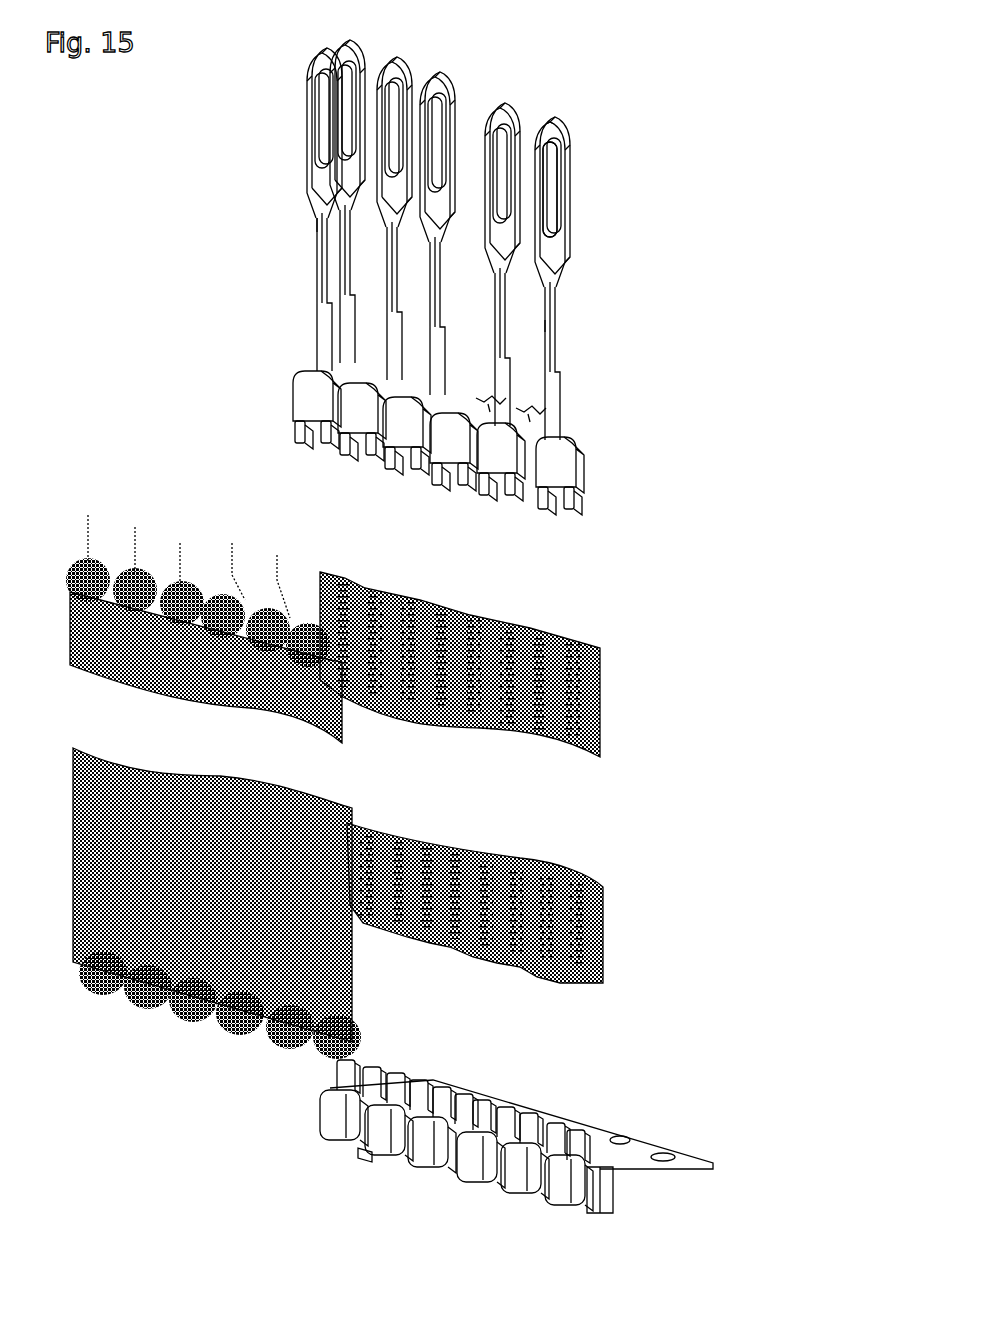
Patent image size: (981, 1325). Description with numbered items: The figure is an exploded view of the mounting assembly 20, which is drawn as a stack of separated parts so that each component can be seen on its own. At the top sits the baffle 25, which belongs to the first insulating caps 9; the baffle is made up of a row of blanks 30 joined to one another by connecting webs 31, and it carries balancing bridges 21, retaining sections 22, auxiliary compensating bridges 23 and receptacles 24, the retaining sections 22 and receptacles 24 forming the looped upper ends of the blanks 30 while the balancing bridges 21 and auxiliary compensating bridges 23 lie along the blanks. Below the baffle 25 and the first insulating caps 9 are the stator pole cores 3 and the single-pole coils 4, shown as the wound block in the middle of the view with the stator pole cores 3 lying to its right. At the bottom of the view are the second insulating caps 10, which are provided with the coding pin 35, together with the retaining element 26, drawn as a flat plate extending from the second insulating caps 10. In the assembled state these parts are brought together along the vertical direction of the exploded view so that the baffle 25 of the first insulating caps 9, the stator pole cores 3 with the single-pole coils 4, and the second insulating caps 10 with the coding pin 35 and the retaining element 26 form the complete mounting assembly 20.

The mounting assembly 20 is at (76, 234).
The auxiliary compensating bridges 23 is at (398, 74).
The baffle 25 is at (565, 112).
The receptacles 24 is at (548, 173).
The retaining sections 22 is at (564, 205).
The connecting webs 31 is at (325, 225).
The blanks 30 is at (325, 270).
The balancing bridges 21 is at (512, 408).
The first insulating caps 9 is at (300, 392).
The stator pole cores 3 is at (598, 712).
The single-pole coils 4 is at (98, 972).
The retaining element 26 is at (650, 1143).
The coding pin 35 is at (362, 1160).
The second insulating caps 10 is at (612, 1192).